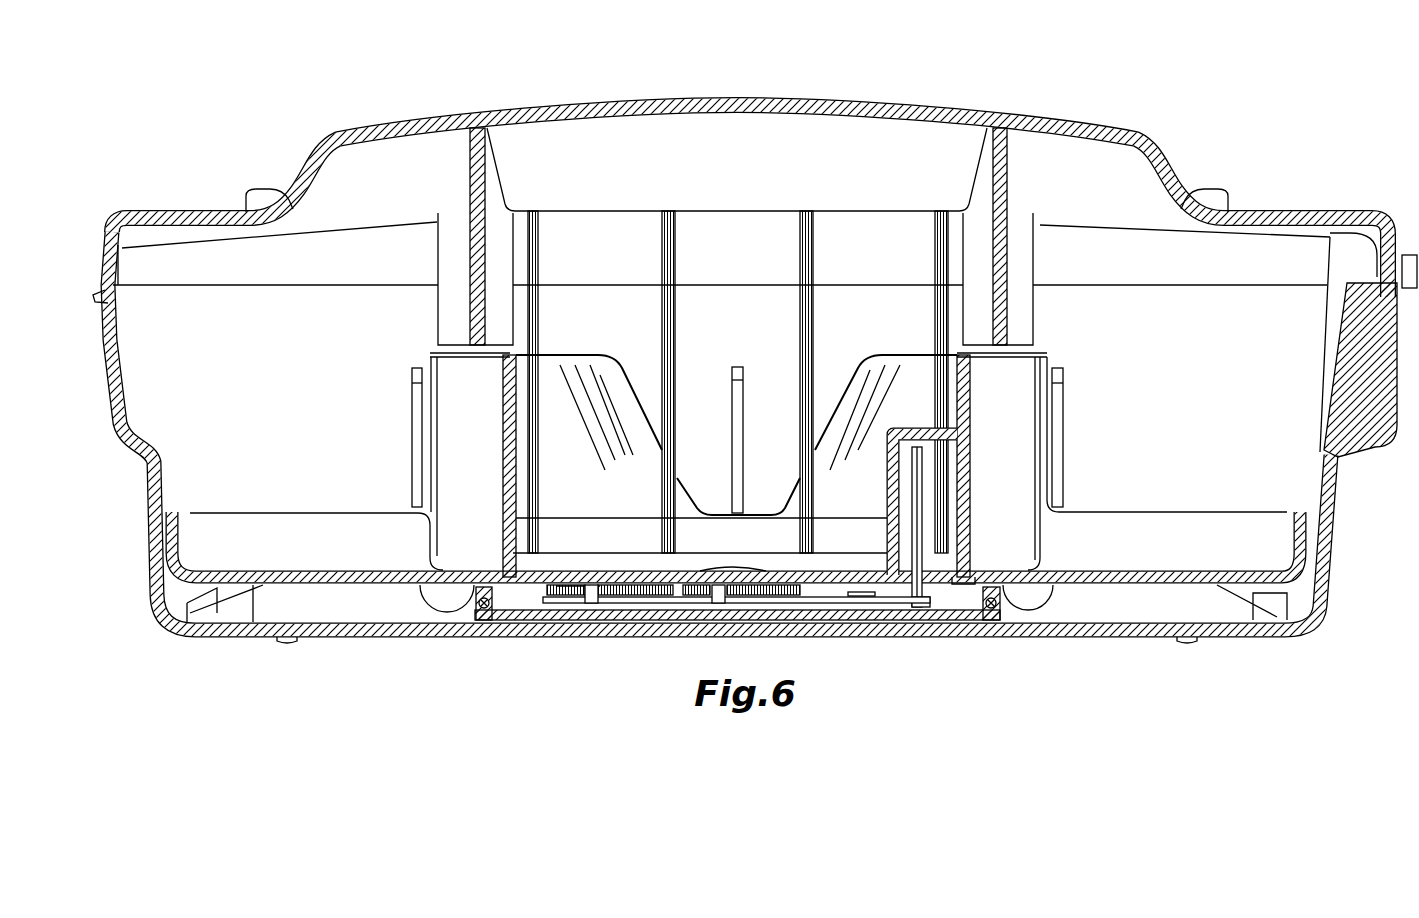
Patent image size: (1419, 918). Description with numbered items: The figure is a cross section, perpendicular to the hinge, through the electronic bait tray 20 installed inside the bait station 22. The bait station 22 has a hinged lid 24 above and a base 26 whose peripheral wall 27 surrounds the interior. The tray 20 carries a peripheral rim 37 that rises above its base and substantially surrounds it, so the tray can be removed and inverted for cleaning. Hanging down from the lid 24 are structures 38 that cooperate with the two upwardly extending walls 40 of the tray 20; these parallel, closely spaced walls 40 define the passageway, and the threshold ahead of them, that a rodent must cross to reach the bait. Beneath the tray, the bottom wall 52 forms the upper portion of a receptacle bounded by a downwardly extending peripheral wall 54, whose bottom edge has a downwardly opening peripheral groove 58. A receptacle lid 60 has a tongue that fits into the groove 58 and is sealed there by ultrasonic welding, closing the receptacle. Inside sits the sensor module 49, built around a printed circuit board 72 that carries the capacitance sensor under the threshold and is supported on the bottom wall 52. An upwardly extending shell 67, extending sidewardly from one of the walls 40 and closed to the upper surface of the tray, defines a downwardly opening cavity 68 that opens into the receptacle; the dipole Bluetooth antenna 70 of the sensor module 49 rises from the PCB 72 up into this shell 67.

The electronic bait tray 20 is at (1101, 544).
The bait station 22 is at (943, 100).
The hinged lid 24 is at (1100, 128).
The base 26 is at (1334, 518).
The peripheral wall 27 is at (108, 376).
The peripheral rim 37 is at (196, 538).
The structures 38 is at (470, 298).
The upwardly extending walls 40 is at (504, 431).
The sensor module 49 is at (830, 605).
The bottom wall 52 is at (576, 580).
The peripheral wall 54 is at (475, 597).
The peripheral groove 58 is at (487, 610).
The receptacle lid 60 is at (567, 622).
The shell 67 is at (893, 430).
The cavity 68 is at (968, 575).
The dipole Bluetooth antenna 70 is at (922, 470).
The printed circuit board 72 is at (658, 605).